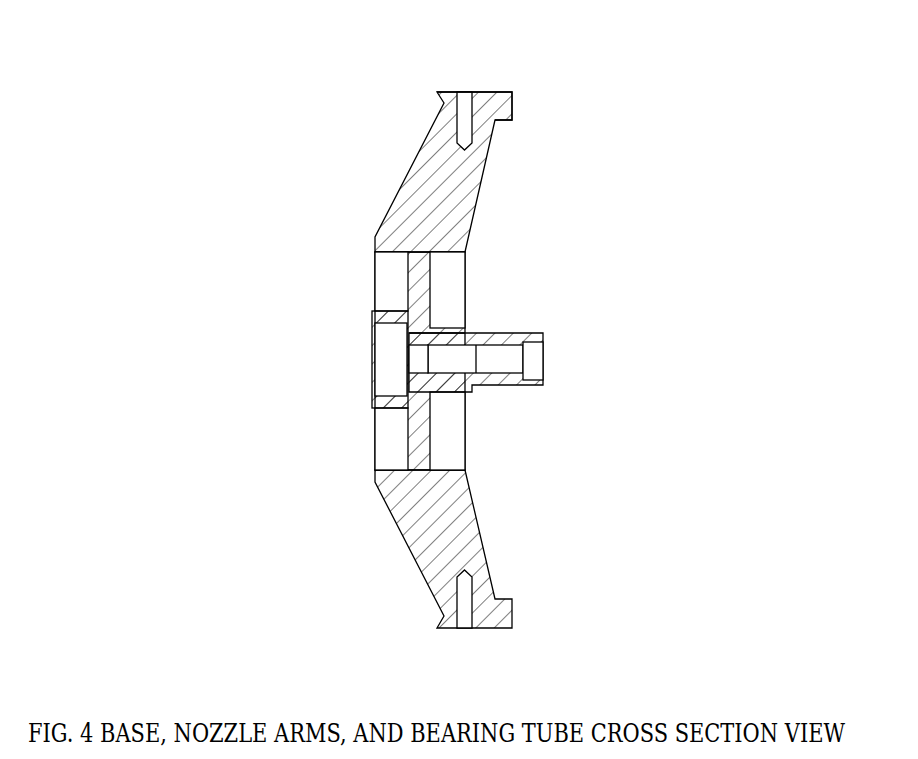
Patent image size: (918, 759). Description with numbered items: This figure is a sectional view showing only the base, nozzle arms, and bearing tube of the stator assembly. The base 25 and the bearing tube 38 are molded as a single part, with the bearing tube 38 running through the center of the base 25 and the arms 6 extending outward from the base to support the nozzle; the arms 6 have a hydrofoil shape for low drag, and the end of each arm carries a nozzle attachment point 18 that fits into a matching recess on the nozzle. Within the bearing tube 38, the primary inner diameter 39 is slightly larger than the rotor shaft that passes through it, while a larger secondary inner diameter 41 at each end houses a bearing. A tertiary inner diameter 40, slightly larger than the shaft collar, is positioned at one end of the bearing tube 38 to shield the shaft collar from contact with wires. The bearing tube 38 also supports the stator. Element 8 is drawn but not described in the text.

The arms 6 is at (326, 285).
The nozzle arm 8 is at (349, 335).
The nozzle attachment point 18 is at (544, 82).
The base 25 is at (304, 251).
The bearing tube 38 is at (522, 315).
The primary inner diameter 39 is at (540, 327).
The tertiary inner diameter 40 is at (325, 359).
The secondary inner diameter 41 is at (545, 402).